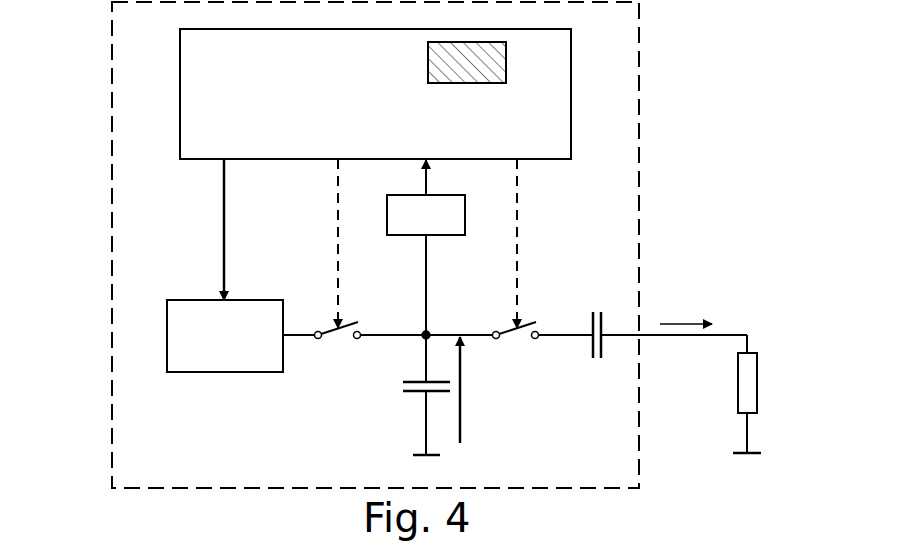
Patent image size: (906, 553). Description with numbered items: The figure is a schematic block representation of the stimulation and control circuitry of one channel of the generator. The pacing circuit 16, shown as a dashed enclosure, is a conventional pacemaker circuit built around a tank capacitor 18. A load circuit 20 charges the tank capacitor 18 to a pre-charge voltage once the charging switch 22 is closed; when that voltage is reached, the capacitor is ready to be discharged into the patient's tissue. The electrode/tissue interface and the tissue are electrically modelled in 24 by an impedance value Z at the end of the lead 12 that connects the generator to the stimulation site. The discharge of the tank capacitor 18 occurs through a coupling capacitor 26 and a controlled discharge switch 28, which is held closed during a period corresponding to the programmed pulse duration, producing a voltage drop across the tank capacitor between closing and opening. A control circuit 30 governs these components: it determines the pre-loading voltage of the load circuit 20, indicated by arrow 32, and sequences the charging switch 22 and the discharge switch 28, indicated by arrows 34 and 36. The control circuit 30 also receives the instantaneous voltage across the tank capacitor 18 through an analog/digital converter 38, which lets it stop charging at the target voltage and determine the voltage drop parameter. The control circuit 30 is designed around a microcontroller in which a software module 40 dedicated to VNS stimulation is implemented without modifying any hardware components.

The lead 12 is at (693, 336).
The pacing circuit 16 is at (167, 278).
The tank capacitor 18 is at (415, 392).
The load circuit 20 is at (225, 373).
The charging switch 22 is at (355, 323).
The electrode/tissue impedance model 24 is at (760, 363).
The coupling capacitor 26 is at (603, 311).
The discharge switch 28 is at (528, 319).
The control circuit 30 is at (194, 77).
The pre-loading voltage control arrow 32 is at (223, 198).
The charging switch control arrow 34 is at (338, 198).
The discharge switch control arrow 36 is at (517, 261).
The analog/digital converter 38 is at (466, 213).
The software module 40 is at (498, 62).